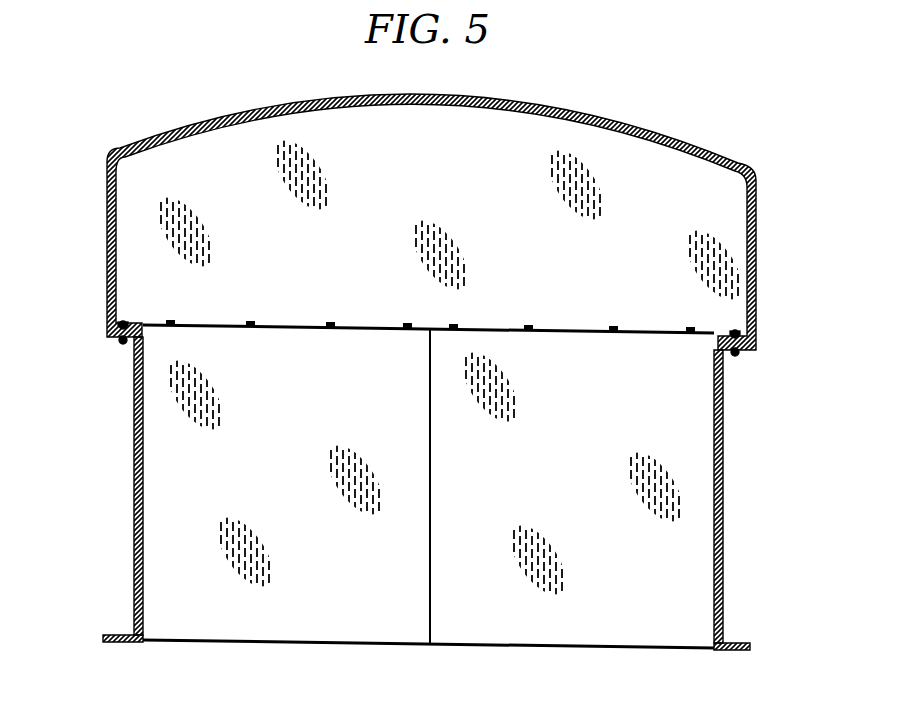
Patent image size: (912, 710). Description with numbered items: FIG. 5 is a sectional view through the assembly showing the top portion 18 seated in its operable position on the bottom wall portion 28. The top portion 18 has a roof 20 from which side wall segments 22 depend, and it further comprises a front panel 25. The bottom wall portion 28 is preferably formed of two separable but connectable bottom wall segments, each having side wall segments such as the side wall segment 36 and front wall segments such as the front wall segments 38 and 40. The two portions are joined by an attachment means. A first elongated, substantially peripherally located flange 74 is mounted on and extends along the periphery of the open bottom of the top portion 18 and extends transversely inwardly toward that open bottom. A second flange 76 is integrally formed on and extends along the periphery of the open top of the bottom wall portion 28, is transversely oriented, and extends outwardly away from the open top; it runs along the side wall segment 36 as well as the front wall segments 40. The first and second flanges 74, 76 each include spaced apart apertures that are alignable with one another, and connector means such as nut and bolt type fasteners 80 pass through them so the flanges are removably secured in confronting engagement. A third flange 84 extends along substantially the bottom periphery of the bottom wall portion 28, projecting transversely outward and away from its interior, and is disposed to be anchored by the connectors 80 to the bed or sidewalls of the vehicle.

The top portion 18 is at (702, 83).
The roof 20 is at (528, 100).
The side wall segments 22 is at (107, 226).
The front panel 25 is at (490, 184).
The bottom wall portion 28 is at (776, 558).
The side wall segment 36 is at (134, 492).
The front wall segment 38 is at (662, 433).
The front wall segment 40 is at (356, 420).
The first flange 74 is at (110, 340).
The second flange 76 is at (140, 325).
The nut and bolt type fasteners 80 is at (332, 325).
The third flange 84 is at (116, 635).